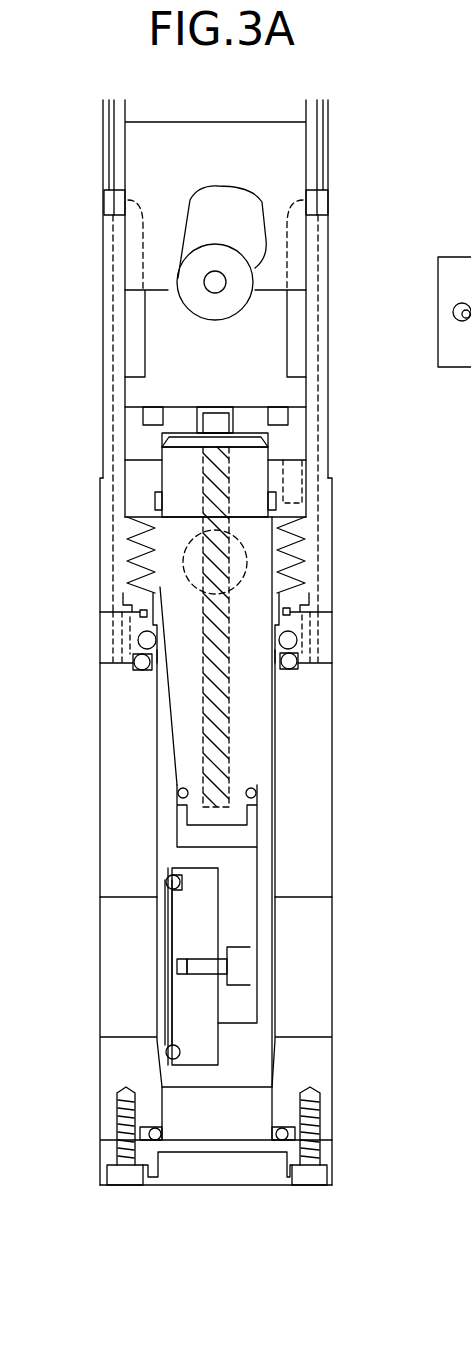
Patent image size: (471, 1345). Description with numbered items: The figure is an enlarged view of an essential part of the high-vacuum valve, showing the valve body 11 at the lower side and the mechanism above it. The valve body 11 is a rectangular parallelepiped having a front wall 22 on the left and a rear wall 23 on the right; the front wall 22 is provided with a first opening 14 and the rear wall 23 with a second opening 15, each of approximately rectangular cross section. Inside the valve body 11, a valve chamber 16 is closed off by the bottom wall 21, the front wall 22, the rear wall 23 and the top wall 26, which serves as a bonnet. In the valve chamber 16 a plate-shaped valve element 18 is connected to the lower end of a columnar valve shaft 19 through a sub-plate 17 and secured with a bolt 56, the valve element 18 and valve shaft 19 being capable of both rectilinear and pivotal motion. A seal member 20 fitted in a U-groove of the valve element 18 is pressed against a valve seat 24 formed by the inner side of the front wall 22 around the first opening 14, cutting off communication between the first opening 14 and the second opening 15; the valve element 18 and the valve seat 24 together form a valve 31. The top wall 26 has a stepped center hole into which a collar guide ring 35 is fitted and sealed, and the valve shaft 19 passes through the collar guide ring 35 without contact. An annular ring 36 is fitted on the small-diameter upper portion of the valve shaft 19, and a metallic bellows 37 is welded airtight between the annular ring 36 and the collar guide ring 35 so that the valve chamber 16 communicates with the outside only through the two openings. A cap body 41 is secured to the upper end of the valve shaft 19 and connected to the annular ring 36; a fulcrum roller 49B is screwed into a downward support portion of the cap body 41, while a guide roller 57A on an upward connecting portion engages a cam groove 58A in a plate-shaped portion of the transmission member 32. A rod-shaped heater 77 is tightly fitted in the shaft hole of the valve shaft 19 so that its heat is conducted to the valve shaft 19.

The valve body 11 is at (98, 1196).
The first opening 14 is at (105, 950).
The second opening 15 is at (322, 968).
The valve chamber 16 is at (247, 1076).
The sub-plate 17 is at (248, 865).
The valve element 18 is at (203, 1058).
The valve shaft 19 is at (262, 705).
The seal member 20 is at (168, 878).
The bottom wall 21 is at (323, 1152).
The front wall 22 is at (113, 747).
The rear wall 23 is at (322, 793).
The valve seat 24 is at (166, 1050).
The top wall 26 is at (323, 635).
The valve 31 is at (155, 1064).
The transmission member 32 is at (286, 171).
The collar guide ring 35 is at (298, 598).
The annular ring 36 is at (134, 470).
The bellows 37 is at (296, 557).
The cap body 41 is at (270, 337).
The fulcrum roller 49B is at (247, 557).
The bolt 56 is at (196, 958).
The guide roller 57A is at (215, 313).
The cam groove 58A is at (190, 238).
The heater 77 is at (222, 745).